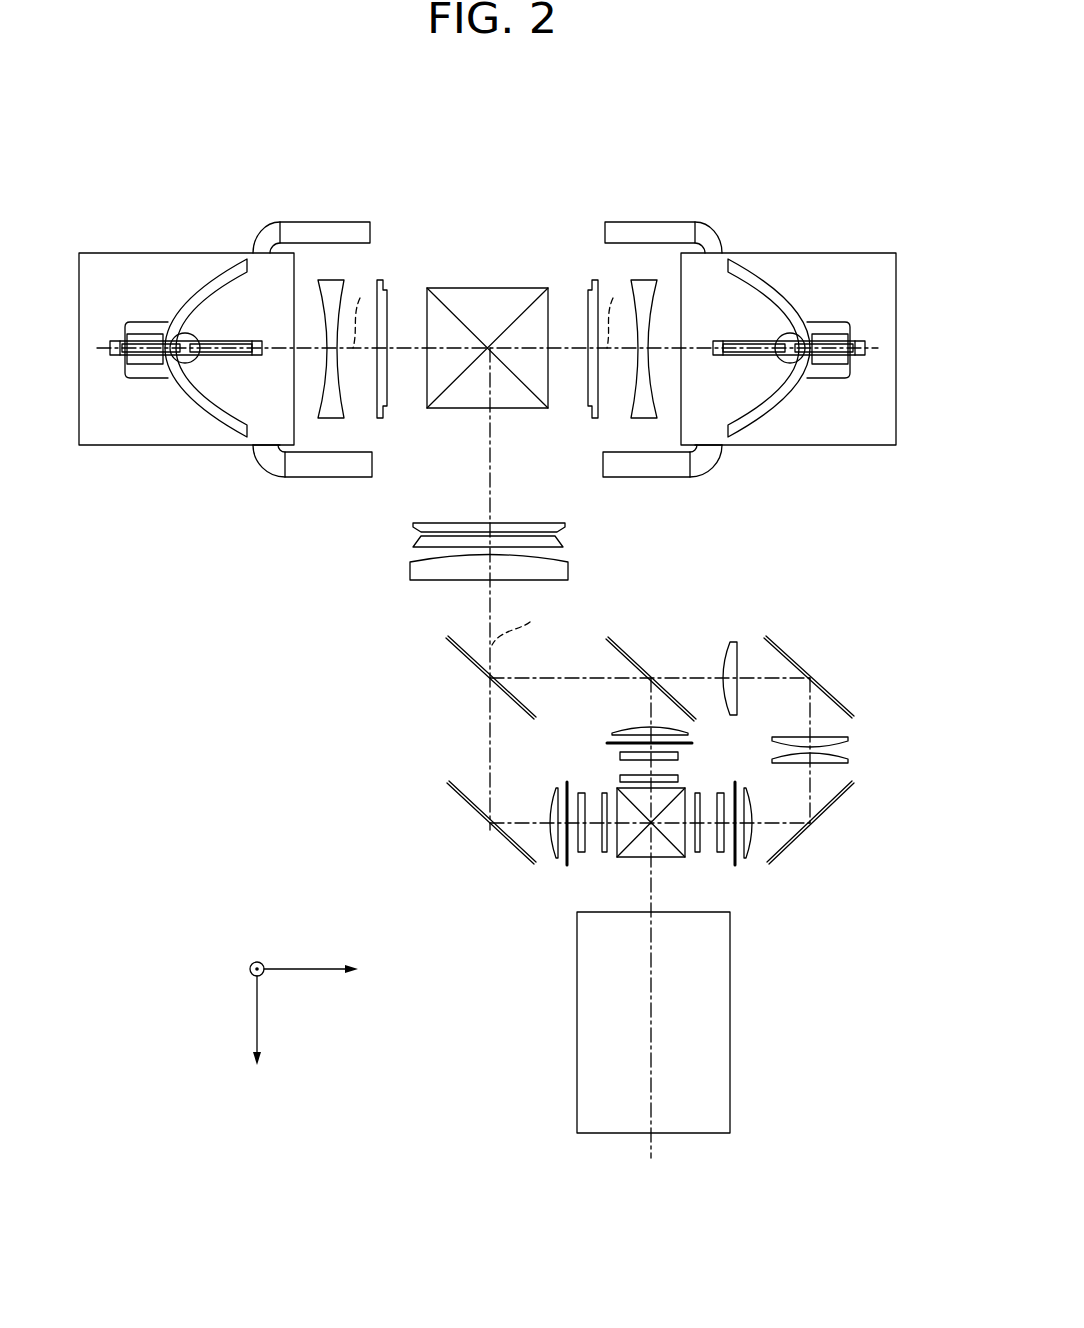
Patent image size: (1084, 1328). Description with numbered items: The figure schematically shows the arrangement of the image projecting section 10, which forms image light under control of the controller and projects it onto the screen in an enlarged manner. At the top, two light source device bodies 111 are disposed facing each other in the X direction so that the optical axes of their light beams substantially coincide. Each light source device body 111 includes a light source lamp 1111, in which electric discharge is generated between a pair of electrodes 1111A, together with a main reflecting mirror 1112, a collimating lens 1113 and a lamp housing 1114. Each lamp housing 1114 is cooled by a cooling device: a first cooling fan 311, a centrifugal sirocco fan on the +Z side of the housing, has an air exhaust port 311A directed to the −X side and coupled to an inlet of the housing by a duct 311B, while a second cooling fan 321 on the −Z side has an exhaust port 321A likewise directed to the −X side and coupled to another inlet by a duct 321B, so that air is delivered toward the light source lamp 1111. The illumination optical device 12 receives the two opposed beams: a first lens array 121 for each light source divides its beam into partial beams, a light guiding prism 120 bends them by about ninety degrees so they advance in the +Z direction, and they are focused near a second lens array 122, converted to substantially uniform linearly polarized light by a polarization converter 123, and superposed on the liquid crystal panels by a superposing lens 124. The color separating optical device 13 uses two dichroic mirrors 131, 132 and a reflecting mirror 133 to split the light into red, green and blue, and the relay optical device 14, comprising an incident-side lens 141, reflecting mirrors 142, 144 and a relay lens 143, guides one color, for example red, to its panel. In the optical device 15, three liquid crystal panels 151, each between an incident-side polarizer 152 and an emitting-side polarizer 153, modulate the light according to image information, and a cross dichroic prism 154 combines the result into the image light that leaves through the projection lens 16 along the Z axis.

The image projecting section 10 is at (651, 94).
The illumination optical device 12 is at (405, 490).
The color separating optical device 13 is at (622, 626).
The relay optical device 14 is at (848, 658).
The optical device 15 is at (718, 878).
The projection lens 16 is at (710, 1042).
The light source device body 111 is at (92, 562).
The light guiding prism 120 is at (492, 296).
The first lens array 121 is at (386, 296).
The second lens array 122 is at (525, 526).
The polarization converter 123 is at (563, 542).
The superposing lens 124 is at (565, 568).
The dichroic mirror 131 is at (463, 657).
The dichroic mirror 132 is at (646, 665).
The reflecting mirror 133 is at (465, 802).
The incident-side lens 141 is at (733, 641).
The reflecting mirror 142 is at (847, 708).
The relay lens 143 is at (850, 740).
The reflecting mirror 144 is at (840, 797).
The liquid crystal panel 151 is at (580, 858).
The incident-side polarizer 152 is at (562, 863).
The emitting-side polarizer 153 is at (605, 858).
The cross dichroic prism 154 is at (638, 856).
The first cooling fan 311 is at (312, 470).
The air exhaust port 311A is at (270, 443).
The duct 311B is at (327, 398).
The second cooling fan 321 is at (337, 227).
The exhaust port 321A is at (278, 221).
The duct 321B is at (262, 238).
The light source lamp 1111 is at (213, 365).
The electrode 1111A is at (195, 338).
The main reflecting mirror 1112 is at (180, 393).
The collimating lens 1113 is at (262, 450).
The lamp housing 1114 is at (183, 446).